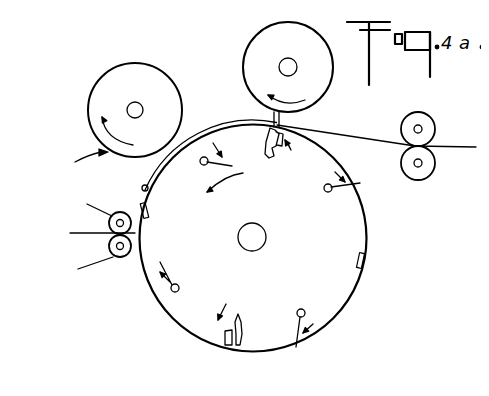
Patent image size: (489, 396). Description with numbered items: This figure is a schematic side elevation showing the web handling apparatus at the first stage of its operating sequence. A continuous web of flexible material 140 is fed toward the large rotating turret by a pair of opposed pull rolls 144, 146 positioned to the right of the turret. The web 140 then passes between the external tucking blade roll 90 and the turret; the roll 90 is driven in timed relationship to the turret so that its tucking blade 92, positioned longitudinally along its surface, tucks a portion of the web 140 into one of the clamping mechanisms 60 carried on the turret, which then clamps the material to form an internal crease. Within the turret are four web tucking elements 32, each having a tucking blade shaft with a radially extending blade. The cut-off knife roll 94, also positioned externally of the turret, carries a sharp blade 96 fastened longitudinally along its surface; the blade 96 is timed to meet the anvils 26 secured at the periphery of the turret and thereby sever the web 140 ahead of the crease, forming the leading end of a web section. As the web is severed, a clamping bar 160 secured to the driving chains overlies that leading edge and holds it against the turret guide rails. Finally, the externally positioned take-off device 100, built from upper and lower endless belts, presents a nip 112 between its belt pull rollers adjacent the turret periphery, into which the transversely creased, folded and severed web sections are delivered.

The anvil 26 is at (148, 210).
The web tucking element 32 is at (201, 164).
The clamping mechanism 60 is at (266, 236).
The external tucking blade roll 90 is at (257, 35).
The tucking blade 92 is at (286, 122).
The cut-off knife roll 94 is at (139, 63).
The sharp blade 96 is at (81, 155).
The take-off device 100 is at (90, 204).
The nip 112 is at (135, 233).
The continuous web of flexible material 140 is at (372, 140).
The pull roll 144 is at (432, 106).
The pull roll 146 is at (418, 181).
The clamping bar 160 is at (141, 188).